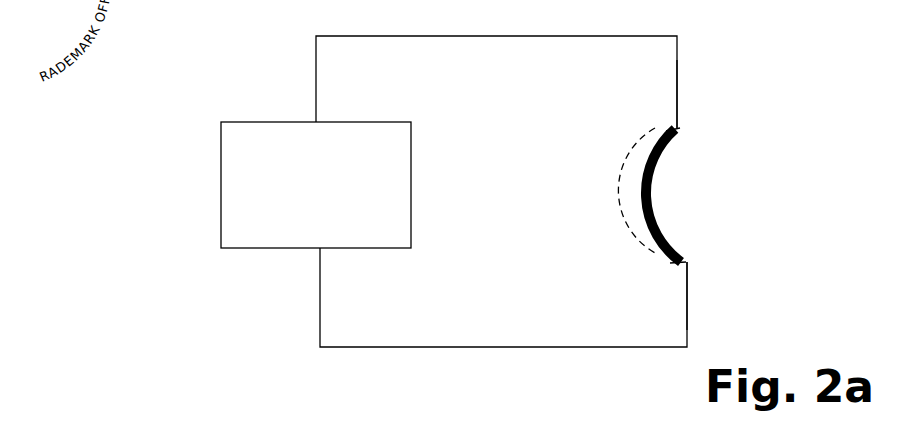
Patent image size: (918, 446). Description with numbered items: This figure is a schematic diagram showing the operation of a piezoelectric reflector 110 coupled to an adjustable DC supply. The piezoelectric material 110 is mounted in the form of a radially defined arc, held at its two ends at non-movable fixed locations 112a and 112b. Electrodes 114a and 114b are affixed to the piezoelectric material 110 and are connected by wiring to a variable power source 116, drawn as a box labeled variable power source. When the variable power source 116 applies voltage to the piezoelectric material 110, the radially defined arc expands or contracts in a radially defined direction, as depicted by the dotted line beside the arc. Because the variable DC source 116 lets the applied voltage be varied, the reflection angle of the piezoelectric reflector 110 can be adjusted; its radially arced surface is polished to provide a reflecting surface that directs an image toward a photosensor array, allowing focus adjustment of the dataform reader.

The piezoelectric reflector 110 is at (652, 193).
The non-movable fixed location 112a is at (665, 129).
The non-movable fixed location 112b is at (672, 264).
The electrode 114a is at (677, 100).
The electrode 114b is at (687, 296).
The variable power source 116 is at (221, 162).